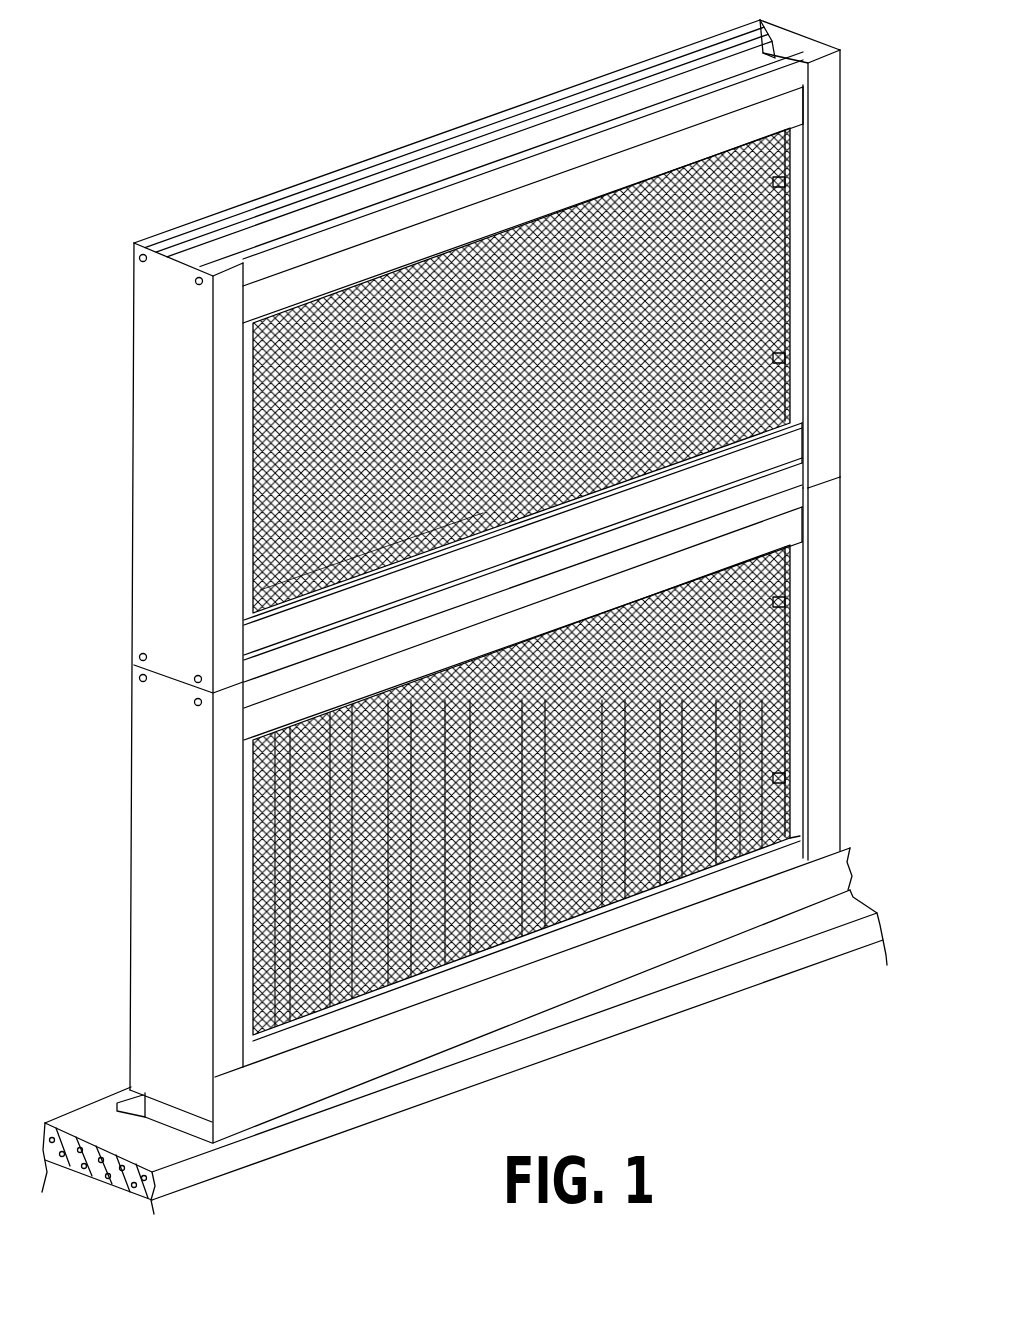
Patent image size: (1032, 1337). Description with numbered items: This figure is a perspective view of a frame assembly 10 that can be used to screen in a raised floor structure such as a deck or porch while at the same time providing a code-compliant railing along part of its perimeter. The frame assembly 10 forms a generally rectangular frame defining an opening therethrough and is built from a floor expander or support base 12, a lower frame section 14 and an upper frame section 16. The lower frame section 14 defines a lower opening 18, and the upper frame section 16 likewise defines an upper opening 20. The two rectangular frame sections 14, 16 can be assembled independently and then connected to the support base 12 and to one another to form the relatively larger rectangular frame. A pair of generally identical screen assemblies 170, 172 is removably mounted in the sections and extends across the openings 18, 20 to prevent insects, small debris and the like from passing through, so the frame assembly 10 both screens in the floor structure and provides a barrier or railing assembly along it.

The frame assembly 10 is at (108, 315).
The support base 12 is at (233, 1098).
The lower frame section 14 is at (300, 891).
The upper frame section 16 is at (300, 471).
The lower opening 18 is at (730, 736).
The upper opening 20 is at (740, 326).
The screen assembly 170 is at (799, 665).
The screen assembly 172 is at (800, 258).